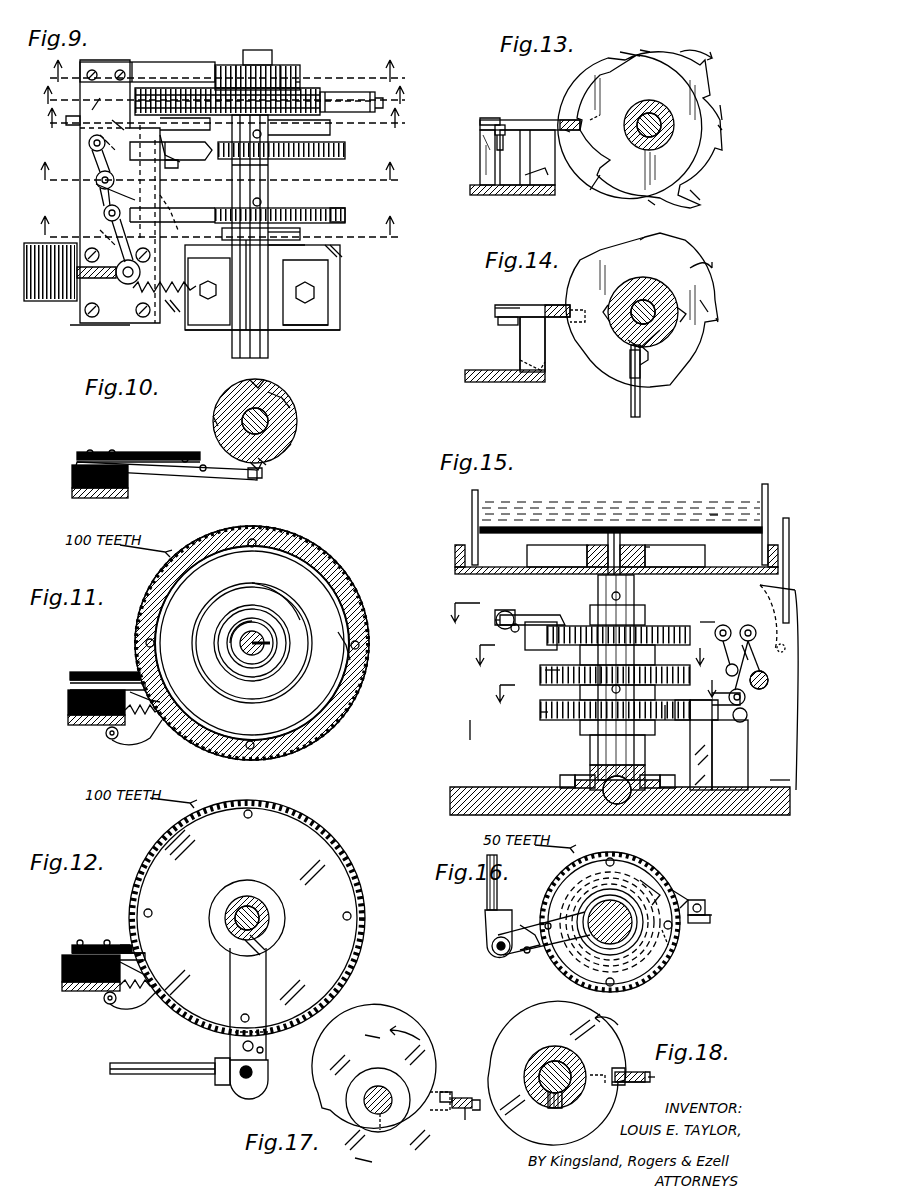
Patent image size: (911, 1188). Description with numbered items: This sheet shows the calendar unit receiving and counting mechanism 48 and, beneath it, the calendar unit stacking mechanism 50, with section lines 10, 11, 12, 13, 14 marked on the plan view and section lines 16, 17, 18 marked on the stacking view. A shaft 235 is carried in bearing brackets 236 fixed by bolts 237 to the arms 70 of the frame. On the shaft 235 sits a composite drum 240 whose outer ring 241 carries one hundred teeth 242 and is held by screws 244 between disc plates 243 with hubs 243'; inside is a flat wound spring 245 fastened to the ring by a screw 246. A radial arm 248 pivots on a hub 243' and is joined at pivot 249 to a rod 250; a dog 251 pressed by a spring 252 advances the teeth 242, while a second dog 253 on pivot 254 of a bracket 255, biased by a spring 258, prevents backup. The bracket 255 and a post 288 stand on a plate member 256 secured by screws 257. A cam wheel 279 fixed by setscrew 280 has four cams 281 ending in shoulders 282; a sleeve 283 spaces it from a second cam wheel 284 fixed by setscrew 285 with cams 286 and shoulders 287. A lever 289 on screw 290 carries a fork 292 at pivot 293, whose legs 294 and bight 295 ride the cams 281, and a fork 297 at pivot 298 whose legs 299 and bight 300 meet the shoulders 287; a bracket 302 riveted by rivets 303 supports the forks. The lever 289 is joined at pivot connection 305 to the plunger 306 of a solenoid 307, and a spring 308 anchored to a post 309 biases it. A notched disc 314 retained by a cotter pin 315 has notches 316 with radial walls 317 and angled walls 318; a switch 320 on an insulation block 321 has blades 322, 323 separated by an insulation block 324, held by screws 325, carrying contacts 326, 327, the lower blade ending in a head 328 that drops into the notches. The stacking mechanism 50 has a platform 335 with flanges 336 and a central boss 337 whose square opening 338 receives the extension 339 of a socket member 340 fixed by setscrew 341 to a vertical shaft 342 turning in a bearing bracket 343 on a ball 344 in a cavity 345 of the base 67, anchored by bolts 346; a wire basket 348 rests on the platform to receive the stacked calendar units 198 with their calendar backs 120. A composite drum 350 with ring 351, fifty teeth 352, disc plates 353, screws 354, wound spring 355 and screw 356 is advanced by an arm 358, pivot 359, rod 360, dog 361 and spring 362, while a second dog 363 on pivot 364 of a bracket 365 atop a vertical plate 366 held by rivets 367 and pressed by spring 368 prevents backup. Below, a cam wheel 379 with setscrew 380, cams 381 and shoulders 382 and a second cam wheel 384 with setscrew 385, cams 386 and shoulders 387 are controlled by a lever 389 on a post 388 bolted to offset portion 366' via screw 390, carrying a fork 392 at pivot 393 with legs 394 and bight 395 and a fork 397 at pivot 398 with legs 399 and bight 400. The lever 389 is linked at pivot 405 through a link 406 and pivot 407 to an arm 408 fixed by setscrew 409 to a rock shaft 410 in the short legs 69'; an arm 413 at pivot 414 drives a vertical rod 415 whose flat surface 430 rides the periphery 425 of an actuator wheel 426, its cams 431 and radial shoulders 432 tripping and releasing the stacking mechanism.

In FIG. 9, the section line 10— 10 is at (224, 74).
In FIG. 9, the section line 11— 11 is at (227, 99).
In FIG. 9, the section line 12— 12 is at (224, 123).
In FIG. 9, the section line 13— 13 is at (220, 176).
In FIG. 9, the section line 14— 14 is at (220, 229).
In FIG. 15, the section line 16— 16 is at (455, 608).
In FIG. 15, the section line 17— 17 is at (586, 646).
In FIG. 15, the section line 18— 18 is at (600, 689).
In FIG. 9, the calendar unit receiving and counting mechanism 48 is at (361, 251).
In FIG. 15, the calendar unit stacking mechanism 50 is at (460, 734).
In FIG. 15, the base 67 is at (450, 790).
In FIG. 15, the short legs 69' is at (772, 809).
In FIG. 9, the arm 70 is at (335, 330).
In FIG. 15, the calendar back 120 is at (715, 515).
In FIG. 15, the record sheet 198 is at (690, 505).
In FIG. 9, the shaft 235 is at (262, 52).
In FIG. 10, the shaft 235 is at (270, 420).
In FIG. 11, the shaft 235 is at (255, 628).
In FIG. 12, the shaft 235 is at (258, 900).
In FIG. 13, the shaft 235 is at (662, 132).
In FIG. 14, the shaft 235 is at (652, 300).
In FIG. 9, the bearing bracket 236 is at (320, 308).
In FIG. 9, the bolt 237 is at (316, 293).
In FIG. 9, the composite drum 240 is at (380, 89).
In FIG. 11, the composite drum 240 is at (323, 538).
In FIG. 12, the composite drum 240 is at (327, 806).
In FIG. 9, the outer ring 241 is at (205, 95).
In FIG. 11, the outer ring 241 is at (330, 572).
In FIG. 12, the outer ring 241 is at (345, 855).
In FIG. 9, the teeth 242 is at (383, 103).
In FIG. 11, the teeth 242 is at (298, 528).
In FIG. 12, the teeth 242 is at (268, 800).
In FIG. 9, the disc plate 243 is at (367, 106).
In FIG. 11, the disc plate 243 is at (278, 643).
In FIG. 12, the disc plate 243 is at (255, 916).
In FIG. 9, the hub 243' is at (328, 59).
In FIG. 12, the hub 243' is at (268, 918).
In FIG. 11, the screws 244 is at (250, 550).
In FIG. 12, the screws 244 is at (252, 818).
In FIG. 11, the flat wound spring 245 is at (292, 598).
In FIG. 11, the screw 246 is at (340, 640).
In FIG. 9, the radial arm 248 is at (318, 124).
In FIG. 12, the radial arm 248 is at (252, 970).
In FIG. 12, the pivot 249 is at (238, 1082).
In FIG. 9, the rod 250 is at (80, 112).
In FIG. 12, the rod 250 is at (140, 1072).
In FIG. 12, the dog 251 is at (275, 1034).
In FIG. 12, the spring 252 is at (268, 1045).
In FIG. 11, the second dog 253 is at (140, 735).
In FIG. 12, the second dog 253 is at (135, 1005).
In FIG. 11, the pivot 254 is at (112, 740).
In FIG. 12, the pivot 254 is at (110, 1005).
In FIG. 11, the bracket 255 is at (105, 725).
In FIG. 12, the bracket 255 is at (120, 990).
In FIG. 9, the plate member 256 is at (100, 62).
In FIG. 10, the plate member 256 is at (90, 496).
In FIG. 11, the plate member 256 is at (68, 720).
In FIG. 12, the plate member 256 is at (62, 990).
In FIG. 13, the plate member 256 is at (492, 195).
In FIG. 14, the plate member 256 is at (468, 372).
In FIG. 9, the screws 257 is at (88, 250).
In FIG. 9, the spring 258 is at (165, 88).
In FIG. 11, the spring 258 is at (150, 700).
In FIG. 12, the spring 258 is at (140, 985).
In FIG. 9, the cam wheel 279 is at (332, 158).
In FIG. 13, the cam wheel 279 is at (700, 95).
In FIG. 9, the setscrew 280 is at (262, 133).
In FIG. 13, the peripheral cams 281 is at (622, 52).
In FIG. 9, the offset radial shoulders 282 is at (180, 150).
In FIG. 13, the offset radial shoulders 282 is at (648, 50).
In FIG. 9, the sleeve 283 is at (272, 172).
In FIG. 13, the sleeve 283 is at (655, 100).
In FIG. 9, the second cam wheel 284 is at (340, 215).
In FIG. 14, the second cam wheel 284 is at (705, 308).
In FIG. 9, the setscrew 285 is at (272, 195).
In FIG. 9, the peripheral cams 286 is at (300, 236).
In FIG. 14, the peripheral cams 286 is at (605, 250).
In FIG. 9, the offset radial shoulders 287 is at (342, 208).
In FIG. 14, the offset radial shoulders 287 is at (640, 240).
In FIG. 9, the post 288 is at (95, 170).
In FIG. 13, the post 288 is at (493, 160).
In FIG. 9, the lever 289 is at (115, 190).
In FIG. 13, the lever 289 is at (490, 130).
In FIG. 14, the lever 289 is at (498, 325).
In FIG. 9, the screw 290 is at (97, 178).
In FIG. 13, the screw 290 is at (508, 125).
In FIG. 9, the fork 292 is at (120, 143).
In FIG. 13, the fork 292 is at (535, 120).
In FIG. 9, the pivot 293 is at (88, 143).
In FIG. 13, the pivot 293 is at (495, 120).
In FIG. 9, the legs 294 is at (182, 158).
In FIG. 13, the legs 294 is at (600, 112).
In FIG. 9, the bight 295 is at (172, 165).
In FIG. 13, the bight 295 is at (575, 125).
In FIG. 9, the fork 297 is at (118, 283).
In FIG. 14, the fork 297 is at (540, 312).
In FIG. 9, the pivot 298 is at (130, 216).
In FIG. 14, the pivot 298 is at (522, 312).
In FIG. 9, the legs 299 is at (185, 210).
In FIG. 9, the bight 300 is at (165, 288).
In FIG. 14, the bight 300 is at (572, 312).
In FIG. 9, the bracket 302 is at (108, 213).
In FIG. 13, the bracket 302 is at (575, 135).
In FIG. 14, the bracket 302 is at (540, 365).
In FIG. 13, the rivets 303 is at (560, 170).
In FIG. 14, the rivets 303 is at (525, 362).
In FIG. 9, the pivot connection 305 is at (92, 318).
In FIG. 9, the plunger 306 is at (90, 270).
In FIG. 9, the solenoid 307 is at (40, 300).
In FIG. 9, the spring 308 is at (185, 302).
In FIG. 9, the post 309 is at (208, 300).
In FIG. 9, the disc 314 is at (275, 85).
In FIG. 10, the disc 314 is at (293, 400).
In FIG. 9, the cotter pin 315 is at (272, 68).
In FIG. 9, the notches 316 is at (270, 74).
In FIG. 10, the notches 316 is at (296, 432).
In FIG. 10, the radial wall 317 is at (262, 382).
In FIG. 10, the angled wall 318 is at (270, 390).
In FIG. 9, the switch 320 is at (144, 53).
In FIG. 10, the switch 320 is at (157, 442).
In FIG. 11, the switch 320 is at (128, 671).
In FIG. 12, the switch 320 is at (128, 937).
In FIG. 9, the insulation block 321 is at (104, 96).
In FIG. 10, the insulation block 321 is at (72, 478).
In FIG. 11, the insulation block 321 is at (68, 699).
In FIG. 12, the insulation block 321 is at (62, 962).
In FIG. 9, the lower resilient blade 322 is at (200, 88).
In FIG. 10, the lower resilient blade 322 is at (158, 472).
In FIG. 11, the lower resilient blade 322 is at (140, 686).
In FIG. 12, the lower resilient blade 322 is at (150, 950).
In FIG. 9, the upper resilient blade 323 is at (152, 66).
In FIG. 10, the upper resilient blade 323 is at (150, 455).
In FIG. 11, the upper resilient blade 323 is at (140, 668).
In FIG. 12, the upper resilient blade 323 is at (135, 945).
In FIG. 10, the insulation block 324 is at (75, 460).
In FIG. 11, the insulation block 324 is at (70, 680).
In FIG. 12, the insulation block 324 is at (72, 948).
In FIG. 9, the screws 325 is at (120, 70).
In FIG. 10, the screws 325 is at (110, 450).
In FIG. 11, the screws 325 is at (112, 672).
In FIG. 12, the screws 325 is at (105, 940).
In FIG. 10, the contact 326 is at (203, 472).
In FIG. 10, the contact 327 is at (185, 456).
In FIG. 10, the head 328 is at (265, 475).
In FIG. 15, the platform 335 is at (740, 565).
In FIG. 15, the side flanges 336 is at (550, 545).
In FIG. 15, the central boss 337 is at (632, 545).
In FIG. 15, the square opening 338 is at (612, 545).
In FIG. 15, the square reduced extension 339 is at (650, 550).
In FIG. 15, the socket member 340 is at (600, 582).
In FIG. 15, the setscrew 341 is at (612, 596).
In FIG. 15, the vertical shaft 342 is at (605, 800).
In FIG. 16, the vertical shaft 342 is at (622, 900).
In FIG. 17, the vertical shaft 342 is at (390, 1085).
In FIG. 18, the vertical shaft 342 is at (535, 1082).
In FIG. 15, the bearing bracket 343 is at (590, 750).
In FIG. 15, the ball 344 is at (610, 795).
In FIG. 15, the cavity 345 is at (605, 795).
In FIG. 15, the bolts 346 is at (560, 775).
In FIG. 15, the wire basket 348 is at (482, 500).
In FIG. 15, the composite drum 350 is at (659, 615).
In FIG. 16, the composite drum 350 is at (547, 865).
In FIG. 16, the outer ring 351 is at (665, 965).
In FIG. 15, the teeth 352 is at (545, 636).
In FIG. 16, the teeth 352 is at (590, 975).
In FIG. 15, the disc plates 353 is at (650, 612).
In FIG. 16, the disc plates 353 is at (655, 975).
In FIG. 16, the screws 354 is at (608, 858).
In FIG. 16, the wound spring 355 is at (655, 880).
In FIG. 16, the screw 356 is at (680, 940).
In FIG. 15, the arm 358 is at (497, 620).
In FIG. 16, the arm 358 is at (520, 950).
In FIG. 15, the pivot 359 is at (510, 612).
In FIG. 16, the pivot 359 is at (495, 947).
In FIG. 15, the rod 360 is at (500, 612).
In FIG. 16, the rod 360 is at (490, 900).
In FIG. 15, the dog 361 is at (548, 618).
In FIG. 16, the dog 361 is at (535, 910).
In FIG. 15, the spring 362 is at (512, 628).
In FIG. 16, the spring 362 is at (530, 960).
In FIG. 16, the second dog 363 is at (690, 895).
In FIG. 16, the pivot 364 is at (705, 910).
In FIG. 16, the bracket 365 is at (712, 912).
In FIG. 15, the vertical plate 366 is at (677, 745).
In FIG. 16, the vertical plate 366 is at (731, 923).
In FIG. 17, the vertical plate 366 is at (461, 1085).
In FIG. 18, the vertical plate 366 is at (638, 1055).
In FIG. 15, the offset portion 366' is at (764, 716).
In FIG. 15, the rivets 367 is at (700, 780).
In FIG. 16, the spring 368 is at (700, 905).
In FIG. 17, the cam wheel 379 is at (362, 1160).
In FIG. 15, the setscrew 380 is at (598, 694).
In FIG. 17, the setscrew 380 is at (388, 1135).
In FIG. 18, the setscrew 380 is at (565, 1108).
In FIG. 15, the peripheral cams 381 is at (555, 668).
In FIG. 17, the peripheral cams 381 is at (372, 1035).
In FIG. 15, the offset radial shoulders 382 is at (545, 672).
In FIG. 17, the offset radial shoulders 382 is at (318, 1100).
In FIG. 15, the second cam wheel 384 is at (548, 715).
In FIG. 18, the second cam wheel 384 is at (525, 1030).
In FIG. 15, the setscrew 385 is at (590, 722).
In FIG. 15, the peripheral cams 386 is at (540, 710).
In FIG. 17, the peripheral cams 386 is at (475, 1110).
In FIG. 18, the peripheral cams 386 is at (625, 1062).
In FIG. 17, the offset radial shoulders 387 is at (455, 1090).
In FIG. 18, the offset radial shoulders 387 is at (642, 1085).
In FIG. 15, the post 388 is at (745, 705).
In FIG. 15, the lever 389 is at (700, 712).
In FIG. 15, the screw 390 is at (745, 696).
In FIG. 15, the fork 392 is at (720, 735).
In FIG. 18, the fork 392 is at (655, 1080).
In FIG. 15, the pivot 393 is at (750, 720).
In FIG. 15, the legs 394 is at (668, 715).
In FIG. 18, the legs 394 is at (600, 1075).
In FIG. 15, the bight 395 is at (680, 700).
In FIG. 18, the bight 395 is at (630, 1082).
In FIG. 15, the fork 397 is at (705, 628).
In FIG. 17, the fork 397 is at (470, 1120).
In FIG. 15, the pivot 398 is at (750, 625).
In FIG. 15, the legs 399 is at (610, 668).
In FIG. 17, the legs 399 is at (430, 1092).
In FIG. 15, the bight 400 is at (625, 688).
In FIG. 17, the bight 400 is at (405, 1100).
In FIG. 15, the pivot 405 is at (722, 622).
In FIG. 15, the link 406 is at (732, 615).
In FIG. 15, the pivot 407 is at (750, 635).
In FIG. 15, the arm 408 is at (745, 648).
In FIG. 15, the setscrew 409 is at (768, 676).
In FIG. 15, the rock shaft 410 is at (768, 680).
In FIG. 15, the arm 413 is at (785, 590).
In FIG. 15, the pivot 414 is at (782, 600).
In FIG. 14, the vertical rod 415 is at (630, 410).
In FIG. 15, the vertical rod 415 is at (788, 522).
In FIG. 14, the periphery 425 is at (648, 350).
In FIG. 9, the actuator wheel 426 is at (262, 242).
In FIG. 14, the actuator wheel 426 is at (648, 292).
In FIG. 14, the flat surface 430 is at (635, 358).
In FIG. 9, the cams 431 is at (300, 250).
In FIG. 14, the cams 431 is at (615, 290).
In FIG. 9, the radial shoulders 432 is at (282, 232).
In FIG. 14, the radial shoulders 432 is at (645, 295).